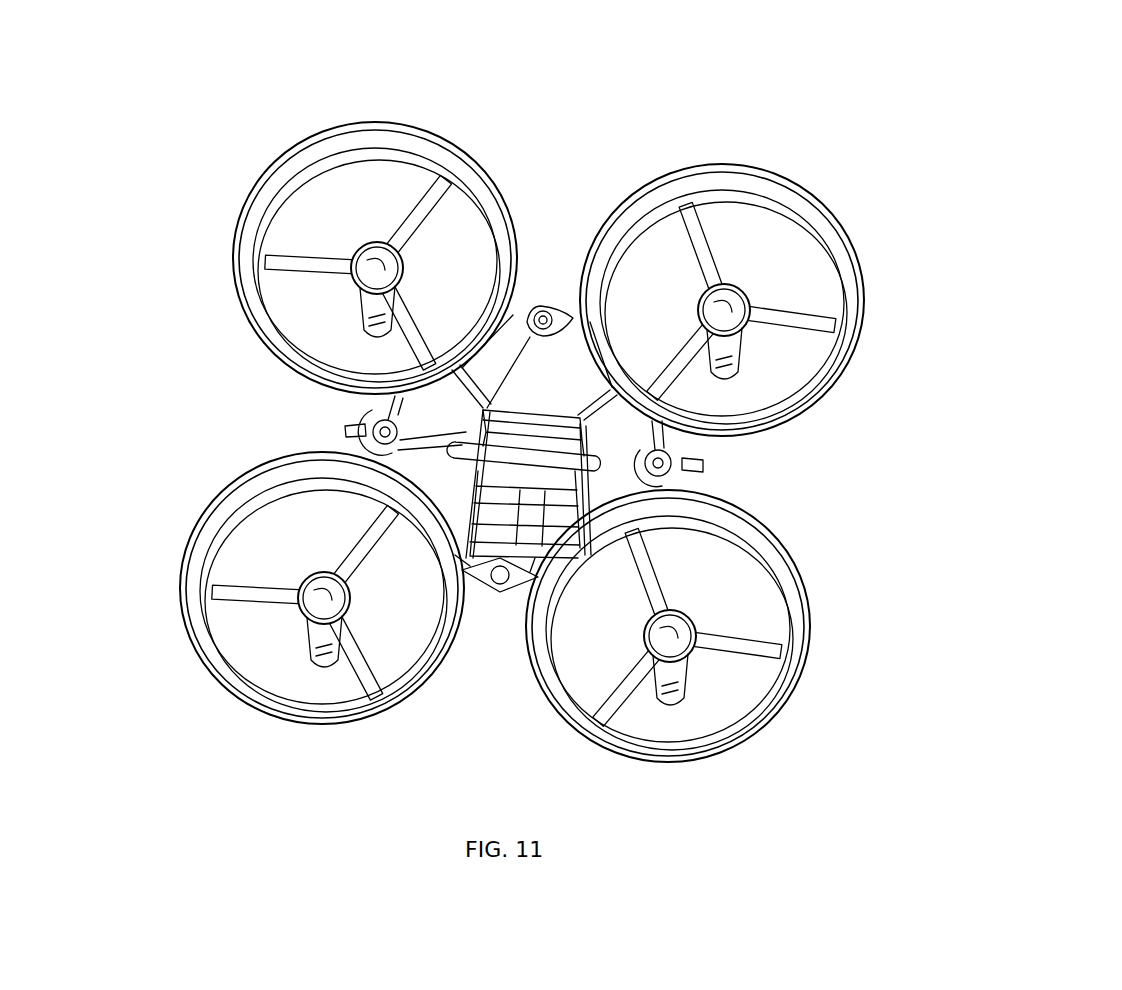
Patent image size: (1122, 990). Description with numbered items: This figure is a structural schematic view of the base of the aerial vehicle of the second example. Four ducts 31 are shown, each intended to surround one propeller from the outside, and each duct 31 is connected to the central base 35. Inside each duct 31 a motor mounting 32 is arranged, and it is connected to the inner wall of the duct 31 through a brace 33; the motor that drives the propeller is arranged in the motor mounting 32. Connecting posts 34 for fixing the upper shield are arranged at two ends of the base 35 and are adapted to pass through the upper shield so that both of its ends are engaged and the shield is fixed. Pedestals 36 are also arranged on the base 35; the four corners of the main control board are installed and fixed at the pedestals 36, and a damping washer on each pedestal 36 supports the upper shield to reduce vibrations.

The duct 31 is at (183, 562).
The motor mounting 32 is at (328, 602).
The brace 33 is at (745, 635).
The connecting post 34 is at (705, 466).
The base 35 is at (543, 310).
The pedestal 36 is at (360, 418).